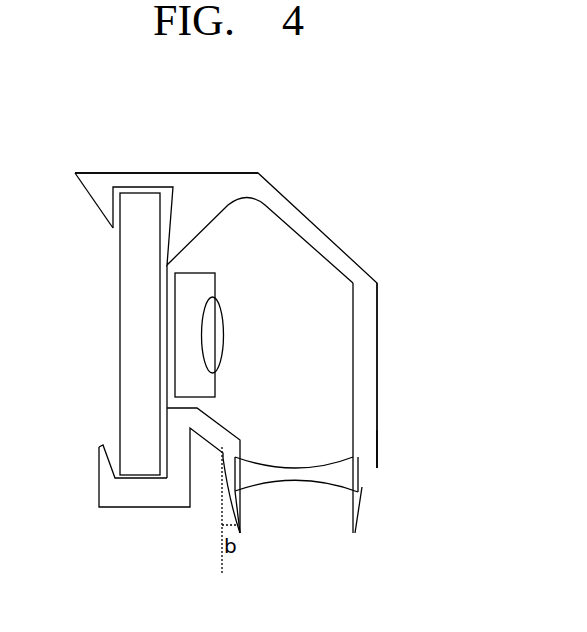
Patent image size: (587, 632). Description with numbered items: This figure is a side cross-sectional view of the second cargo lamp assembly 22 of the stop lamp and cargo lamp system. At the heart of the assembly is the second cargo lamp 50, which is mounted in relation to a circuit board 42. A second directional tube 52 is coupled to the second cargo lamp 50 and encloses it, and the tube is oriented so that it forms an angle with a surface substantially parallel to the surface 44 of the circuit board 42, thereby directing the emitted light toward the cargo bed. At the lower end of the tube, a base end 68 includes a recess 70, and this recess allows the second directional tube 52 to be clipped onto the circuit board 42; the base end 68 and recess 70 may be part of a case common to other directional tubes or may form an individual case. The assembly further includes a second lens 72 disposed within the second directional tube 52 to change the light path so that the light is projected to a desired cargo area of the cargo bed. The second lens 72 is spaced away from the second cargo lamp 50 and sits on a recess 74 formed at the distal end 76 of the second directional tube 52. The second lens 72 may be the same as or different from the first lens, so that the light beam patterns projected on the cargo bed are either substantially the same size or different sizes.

The second cargo lamp assembly 22 is at (366, 191).
The circuit board 42 is at (130, 296).
The surface 44 is at (166, 340).
The second cargo lamp 50 is at (188, 370).
The second directional tube 52 is at (368, 368).
The base end 68 is at (133, 173).
The recess 70 is at (167, 205).
The second lens 72 is at (297, 480).
The recess 74 is at (377, 468).
The distal end 76 is at (366, 510).